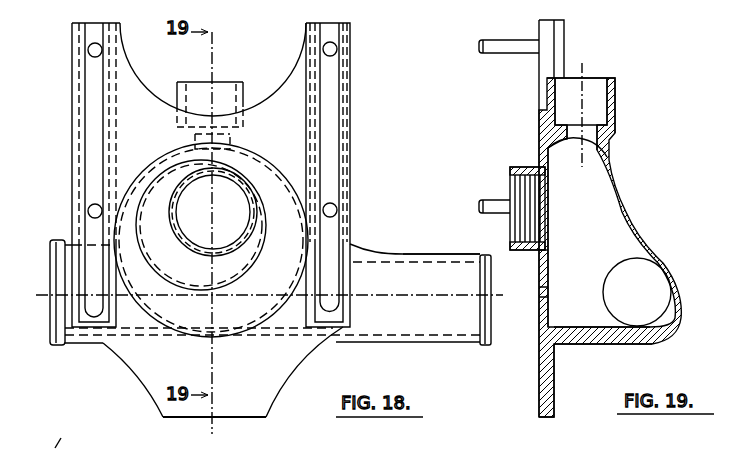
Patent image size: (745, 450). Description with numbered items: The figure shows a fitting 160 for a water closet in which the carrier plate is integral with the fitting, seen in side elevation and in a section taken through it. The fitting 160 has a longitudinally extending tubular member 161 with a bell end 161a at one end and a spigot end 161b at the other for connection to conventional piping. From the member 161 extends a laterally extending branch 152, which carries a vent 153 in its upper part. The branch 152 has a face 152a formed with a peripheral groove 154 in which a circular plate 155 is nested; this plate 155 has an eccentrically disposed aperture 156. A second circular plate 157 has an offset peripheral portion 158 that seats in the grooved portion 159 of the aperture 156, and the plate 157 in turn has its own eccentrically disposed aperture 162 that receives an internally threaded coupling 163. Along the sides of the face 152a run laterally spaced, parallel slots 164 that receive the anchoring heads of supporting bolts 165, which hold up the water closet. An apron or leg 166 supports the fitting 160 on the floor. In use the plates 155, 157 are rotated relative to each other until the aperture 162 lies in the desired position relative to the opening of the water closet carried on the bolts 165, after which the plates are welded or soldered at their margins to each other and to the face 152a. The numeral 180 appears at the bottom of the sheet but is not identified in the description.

In FIG. 19, the laterally extending branch 152 is at (619, 191).
In FIG. 18, the face of the branch 152a is at (146, 91).
In FIG. 19, the face of the branch 152a is at (538, 127).
In FIG. 18, the vent 153 is at (229, 78).
In FIG. 19, the vent 153 is at (614, 101).
In FIG. 19, the peripheral groove 154 is at (535, 338).
In FIG. 18, the circular plate 155 is at (163, 312).
In FIG. 19, the circular plate 155 is at (547, 316).
In FIG. 18, the eccentrically disposed aperture 156 is at (245, 258).
In FIG. 19, the eccentrically disposed aperture 156 is at (539, 294).
In FIG. 18, the second circular plate 157 is at (252, 247).
In FIG. 19, the second circular plate 157 is at (547, 263).
In FIG. 19, the offset peripheral portion 158 is at (540, 291).
In FIG. 19, the grooved portion 159 is at (548, 291).
In FIG. 18, the fitting 160 is at (388, 246).
In FIG. 18, the longitudinally extending tubular member 161 is at (432, 252).
In FIG. 18, the bell end 161a is at (52, 343).
In FIG. 18, the spigot end 161b is at (479, 344).
In FIG. 19, the eccentrically disposed aperture 162 is at (547, 246).
In FIG. 18, the internally threaded coupling 163 is at (199, 193).
In FIG. 19, the internally threaded coupling 163 is at (508, 170).
In FIG. 18, the laterally spaced parallel slots 164 is at (72, 160).
In FIG. 18, the supporting bolts 165 is at (85, 48).
In FIG. 18, the apron or leg 166 is at (184, 416).
In FIG. 18, the support 180 is at (296, 438).